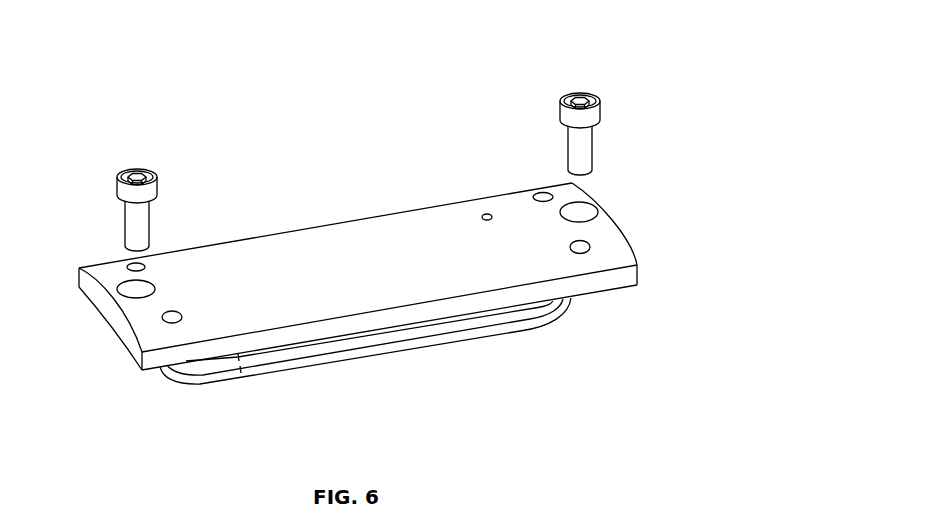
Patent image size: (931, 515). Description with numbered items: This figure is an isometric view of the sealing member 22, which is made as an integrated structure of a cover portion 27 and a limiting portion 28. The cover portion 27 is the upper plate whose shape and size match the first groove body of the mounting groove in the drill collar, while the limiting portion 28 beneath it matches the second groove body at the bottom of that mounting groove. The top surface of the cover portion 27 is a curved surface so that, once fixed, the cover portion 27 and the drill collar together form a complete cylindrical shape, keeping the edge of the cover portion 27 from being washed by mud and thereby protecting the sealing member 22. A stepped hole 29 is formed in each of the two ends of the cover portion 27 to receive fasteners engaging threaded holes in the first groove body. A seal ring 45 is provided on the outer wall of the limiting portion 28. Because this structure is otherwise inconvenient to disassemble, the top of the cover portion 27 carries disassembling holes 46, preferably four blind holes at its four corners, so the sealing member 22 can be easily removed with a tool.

The sealing member 22 is at (634, 41).
The cover portion 27 is at (282, 257).
The limiting portion 28 is at (420, 348).
The stepped hole 29 is at (138, 289).
The seal ring 45 is at (300, 348).
The disassembling hole 46 is at (172, 323).